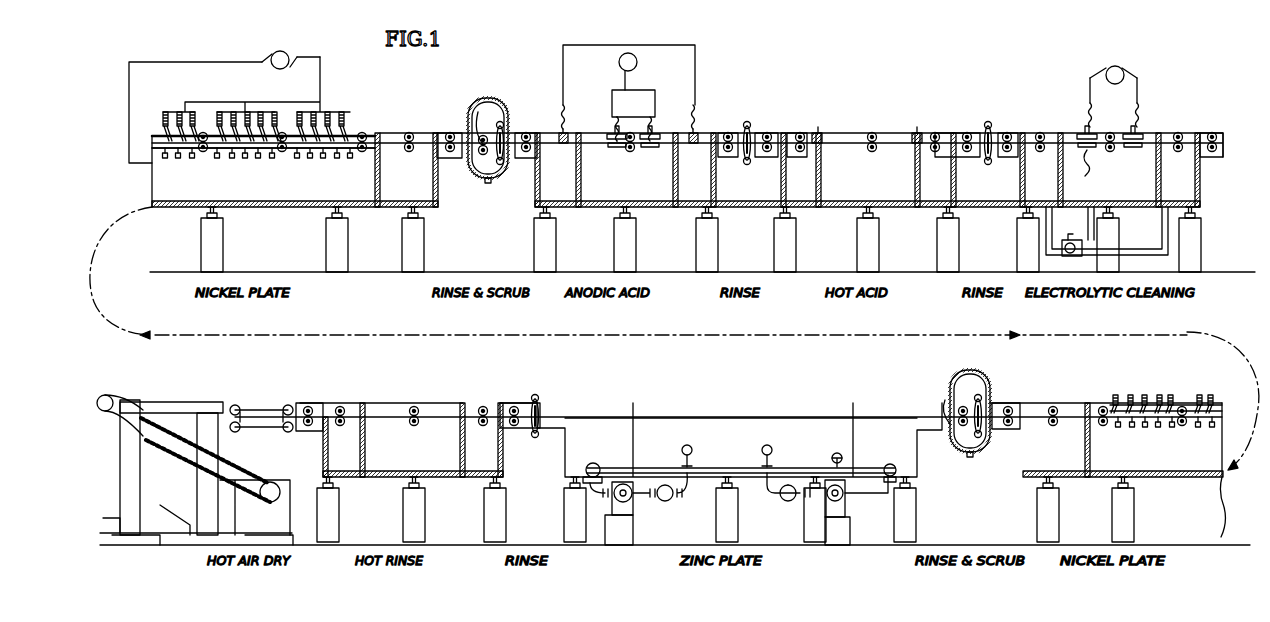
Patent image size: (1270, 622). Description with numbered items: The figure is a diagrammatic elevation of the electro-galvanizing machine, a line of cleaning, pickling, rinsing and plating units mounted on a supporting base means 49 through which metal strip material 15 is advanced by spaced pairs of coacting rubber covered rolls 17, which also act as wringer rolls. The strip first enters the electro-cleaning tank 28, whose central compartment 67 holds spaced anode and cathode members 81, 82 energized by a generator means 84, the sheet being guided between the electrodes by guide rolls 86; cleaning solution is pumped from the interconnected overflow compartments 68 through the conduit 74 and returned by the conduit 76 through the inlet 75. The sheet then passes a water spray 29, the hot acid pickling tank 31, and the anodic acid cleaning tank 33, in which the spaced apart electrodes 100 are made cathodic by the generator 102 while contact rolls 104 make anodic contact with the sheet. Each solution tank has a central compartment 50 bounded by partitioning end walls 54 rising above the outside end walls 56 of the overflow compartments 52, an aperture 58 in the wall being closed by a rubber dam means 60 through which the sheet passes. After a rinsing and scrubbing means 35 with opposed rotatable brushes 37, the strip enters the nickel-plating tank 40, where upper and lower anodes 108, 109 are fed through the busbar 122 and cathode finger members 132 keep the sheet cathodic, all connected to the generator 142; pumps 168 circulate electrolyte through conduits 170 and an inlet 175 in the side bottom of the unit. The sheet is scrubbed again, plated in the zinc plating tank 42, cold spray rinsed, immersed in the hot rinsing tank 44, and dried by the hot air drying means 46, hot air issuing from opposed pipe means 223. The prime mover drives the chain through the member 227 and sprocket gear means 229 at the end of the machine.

The metal strip material 15 is at (393, 134).
The coacting rubber covered rolls 17 is at (450, 132).
The electro-cleaning tank 28 is at (1110, 156).
The water spray 29 is at (504, 128).
The hot acid pickling tank 31 is at (653, 288).
The anodic acid cleaning tank 33 is at (867, 130).
The rinsing and scrubbing means 35 is at (497, 108).
The scrubbing opposed rotatable brushes 37 is at (472, 120).
The nickel-plating tank 40 is at (657, 285).
The zinc plating tank 42 is at (739, 474).
The hot rinsing tank 44 is at (397, 481).
The hot air drying means 46 is at (192, 457).
The supporting base means 49 is at (344, 261).
The central compartment 50 is at (262, 194).
The solution overflow compartments 52 is at (438, 188).
The partitioning end walls 54 is at (822, 182).
The outside end walls 56 is at (783, 173).
The aperture 58 is at (822, 130).
The rubber dam means 60 is at (818, 132).
The central compartment of electro-cleaning tank 67 is at (1108, 189).
The overflow compartments of electro-cleaning tank 68 is at (1048, 181).
The conduit 74 is at (1135, 262).
The inlet 75 is at (1080, 246).
The return conduit 76 is at (1080, 230).
The anode member 81 is at (1136, 126).
The cathode member 82 is at (1090, 126).
The generator means 84 is at (1124, 66).
The guide rolls 86 is at (1104, 165).
The spaced apart electrodes 100 is at (656, 166).
The generator 102 is at (637, 58).
The contact rolls 104 is at (564, 130).
The upper anodes 108 is at (153, 134).
The lower anodes 109 is at (184, 174).
The busbar 122 is at (126, 84).
The cathode finger members 132 is at (153, 126).
The generator 142 is at (286, 57).
The pumps 168 is at (629, 498).
The conduits 170 is at (704, 472).
The electrolyte inlet 175 is at (686, 445).
The opposed pipe means 223 is at (242, 404).
The drive member 227 is at (238, 450).
The sprocket gear means 229 is at (108, 396).